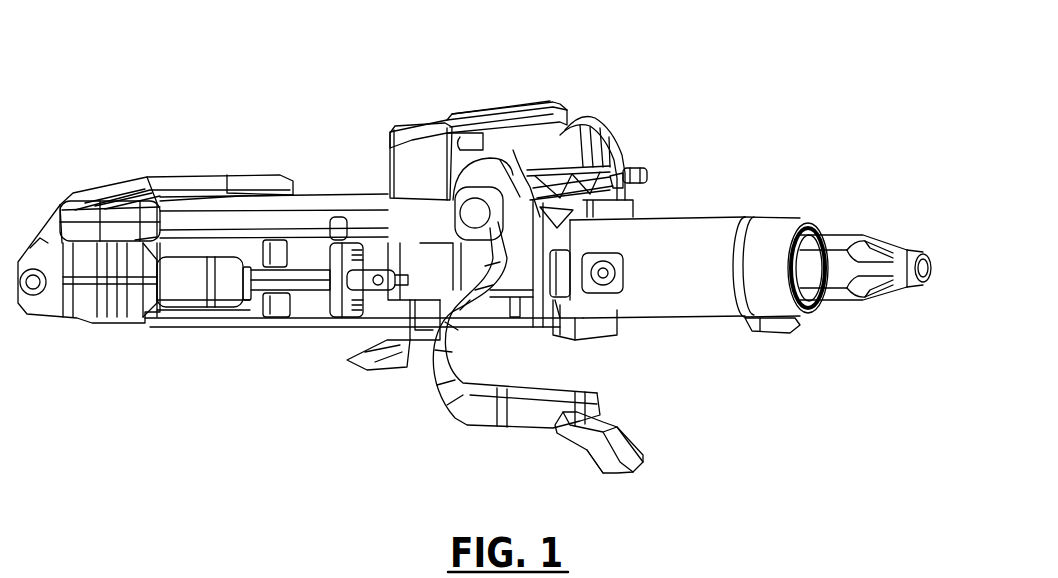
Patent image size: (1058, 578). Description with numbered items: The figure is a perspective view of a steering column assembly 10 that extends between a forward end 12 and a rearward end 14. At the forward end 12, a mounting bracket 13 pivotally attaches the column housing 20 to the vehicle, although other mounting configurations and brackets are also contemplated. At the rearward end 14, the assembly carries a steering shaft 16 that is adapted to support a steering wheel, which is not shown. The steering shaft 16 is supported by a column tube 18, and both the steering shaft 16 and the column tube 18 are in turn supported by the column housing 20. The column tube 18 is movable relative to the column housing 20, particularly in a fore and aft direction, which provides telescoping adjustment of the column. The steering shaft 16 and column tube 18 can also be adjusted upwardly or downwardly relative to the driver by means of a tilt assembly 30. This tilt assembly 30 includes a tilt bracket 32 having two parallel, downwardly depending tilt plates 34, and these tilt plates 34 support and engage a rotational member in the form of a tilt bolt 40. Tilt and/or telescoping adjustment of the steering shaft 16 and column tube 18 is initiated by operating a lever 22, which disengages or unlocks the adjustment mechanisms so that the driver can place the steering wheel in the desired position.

The steering column assembly 10 is at (187, 51).
The forward end 12 is at (29, 339).
The mounting bracket 13 is at (118, 185).
The rearward end 14 is at (906, 206).
The steering shaft 16 is at (838, 292).
The column tube 18 is at (709, 298).
The column housing 20 is at (243, 312).
The lever 22 is at (622, 440).
The tilt assembly 30 is at (612, 122).
The tilt bracket 32 is at (466, 108).
The tilt plates 34 is at (480, 160).
The tilt bolt 40 is at (630, 170).